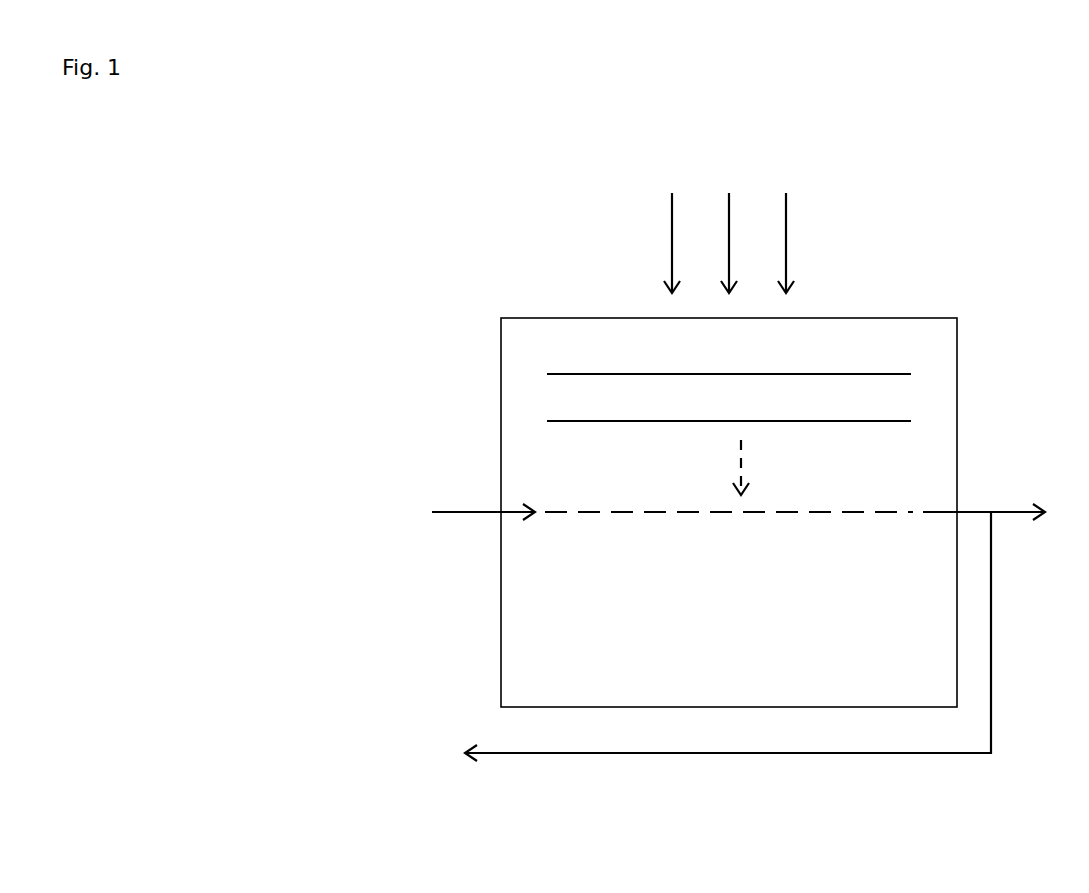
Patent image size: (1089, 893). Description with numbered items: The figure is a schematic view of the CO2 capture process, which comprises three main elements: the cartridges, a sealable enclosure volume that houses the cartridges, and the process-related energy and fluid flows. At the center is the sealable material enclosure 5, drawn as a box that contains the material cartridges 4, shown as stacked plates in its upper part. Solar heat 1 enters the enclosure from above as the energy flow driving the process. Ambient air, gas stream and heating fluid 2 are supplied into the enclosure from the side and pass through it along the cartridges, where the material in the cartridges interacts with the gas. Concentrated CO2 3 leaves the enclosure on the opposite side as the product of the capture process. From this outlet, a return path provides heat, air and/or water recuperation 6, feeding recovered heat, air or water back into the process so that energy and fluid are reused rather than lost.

The solar heat 1 is at (651, 512).
The ambient air, gas stream and heating fluid 2 is at (729, 310).
The concentrated CO2 3 is at (1000, 512).
The material cartridges 4 is at (865, 363).
The material enclosure (sealable) 5 is at (528, 311).
The heat, air and/or water recuperation 6 is at (712, 641).